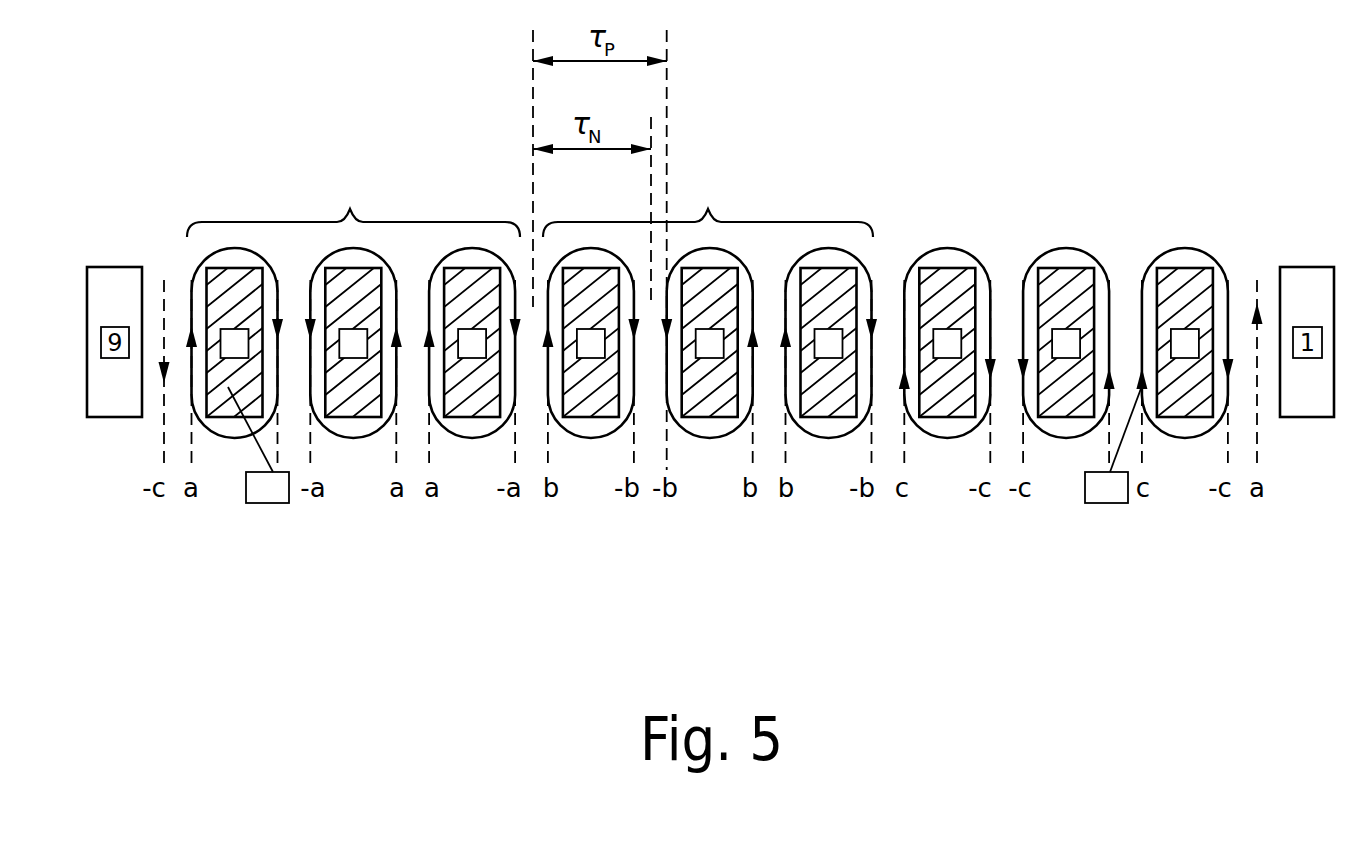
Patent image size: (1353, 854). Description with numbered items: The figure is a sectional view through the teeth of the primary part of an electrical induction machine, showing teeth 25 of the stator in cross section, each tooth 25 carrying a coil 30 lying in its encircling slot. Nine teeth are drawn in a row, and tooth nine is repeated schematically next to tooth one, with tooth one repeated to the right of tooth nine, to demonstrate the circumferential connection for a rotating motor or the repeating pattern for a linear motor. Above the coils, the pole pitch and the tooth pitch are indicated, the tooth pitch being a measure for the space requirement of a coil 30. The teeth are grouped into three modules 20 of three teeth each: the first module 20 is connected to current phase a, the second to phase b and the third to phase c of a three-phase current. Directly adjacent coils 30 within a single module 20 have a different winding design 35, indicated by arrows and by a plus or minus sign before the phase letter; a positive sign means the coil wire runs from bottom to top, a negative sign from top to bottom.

The module 20 is at (530, 200).
The tooth 25 is at (457, 385).
The coil 30 is at (1182, 248).
The winding design 35 is at (1097, 503).